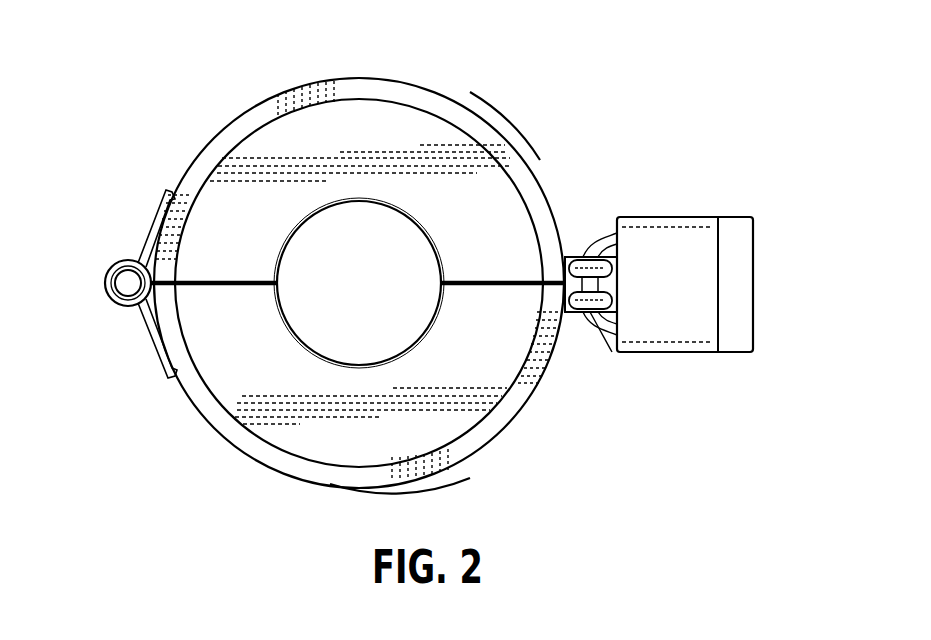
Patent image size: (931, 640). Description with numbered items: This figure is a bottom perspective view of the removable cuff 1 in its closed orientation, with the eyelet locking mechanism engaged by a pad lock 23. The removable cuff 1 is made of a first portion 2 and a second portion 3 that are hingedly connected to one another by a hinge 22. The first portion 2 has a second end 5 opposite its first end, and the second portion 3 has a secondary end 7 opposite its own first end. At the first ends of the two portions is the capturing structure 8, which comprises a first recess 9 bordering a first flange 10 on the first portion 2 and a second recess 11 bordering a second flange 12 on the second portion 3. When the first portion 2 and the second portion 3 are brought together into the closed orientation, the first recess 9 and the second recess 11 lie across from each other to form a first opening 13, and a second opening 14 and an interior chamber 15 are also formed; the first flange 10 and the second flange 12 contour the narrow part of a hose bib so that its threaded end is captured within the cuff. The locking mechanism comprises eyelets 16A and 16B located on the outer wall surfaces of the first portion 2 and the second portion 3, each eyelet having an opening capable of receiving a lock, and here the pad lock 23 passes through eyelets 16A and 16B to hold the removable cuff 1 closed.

The removable cuff 1 is at (482, 100).
The first portion 2 is at (440, 477).
The second portion 3 is at (402, 98).
The second end 5 is at (490, 423).
The secondary end 7 is at (488, 128).
The capturing structure 8 is at (340, 197).
The first recess 9 is at (342, 355).
The first flange 10 is at (288, 373).
The second recess 11 is at (407, 218).
The second flange 12 is at (438, 232).
The first opening 13 is at (412, 283).
The second opening 14 is at (507, 352).
The chamber 15 is at (313, 312).
The eyelet 16A is at (583, 312).
The eyelet 16B is at (580, 257).
The hinge 22 is at (120, 263).
The pad lock 23 is at (740, 297).